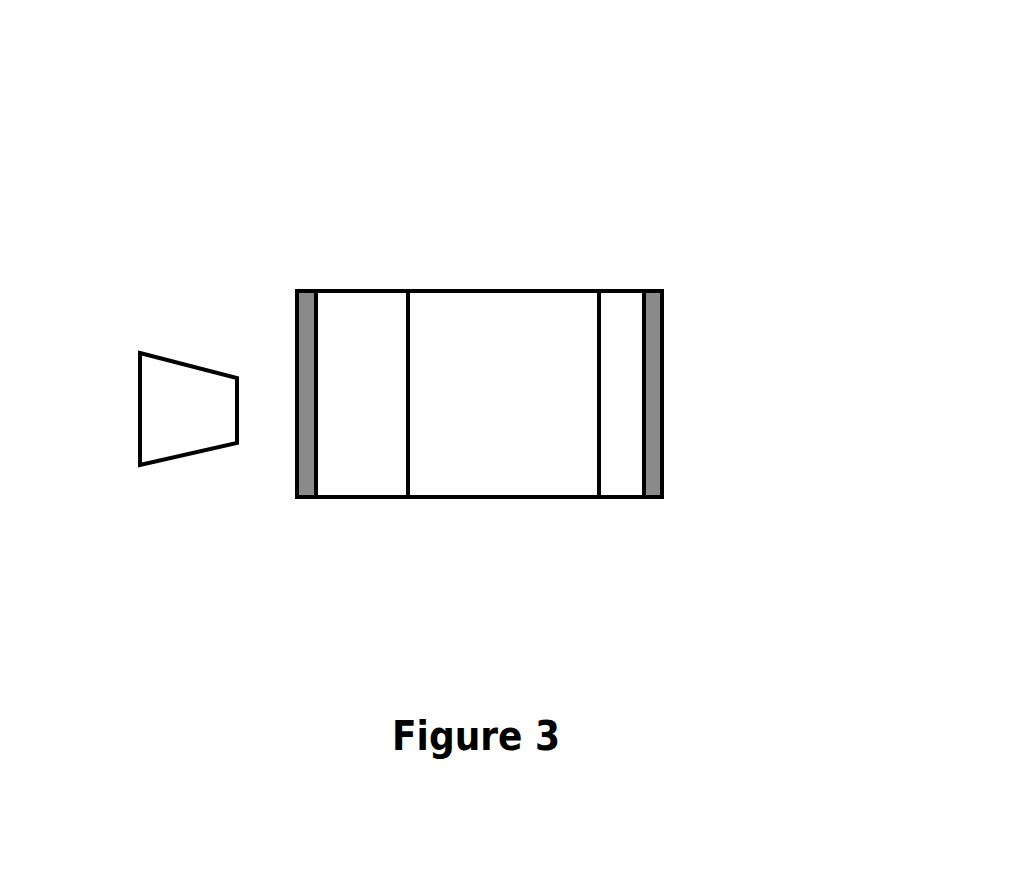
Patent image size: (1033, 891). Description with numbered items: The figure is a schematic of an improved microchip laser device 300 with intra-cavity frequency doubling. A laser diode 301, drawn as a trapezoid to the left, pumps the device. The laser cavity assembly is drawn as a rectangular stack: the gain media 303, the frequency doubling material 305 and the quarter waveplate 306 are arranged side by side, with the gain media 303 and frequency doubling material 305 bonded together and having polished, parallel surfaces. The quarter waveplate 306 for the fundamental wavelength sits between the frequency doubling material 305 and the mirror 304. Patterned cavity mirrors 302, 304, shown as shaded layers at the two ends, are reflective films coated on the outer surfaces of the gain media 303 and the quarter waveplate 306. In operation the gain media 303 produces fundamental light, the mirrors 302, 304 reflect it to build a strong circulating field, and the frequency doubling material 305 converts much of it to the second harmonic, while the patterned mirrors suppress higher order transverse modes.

The microchip laser device 300 is at (748, 117).
The laser diode 301 is at (157, 410).
The patterned cavity mirror 302 is at (307, 345).
The gain media 303 is at (368, 315).
The frequency doubling material 305 is at (518, 315).
The quarter waveplate 306 is at (613, 307).
The patterned cavity mirror 304 is at (657, 363).